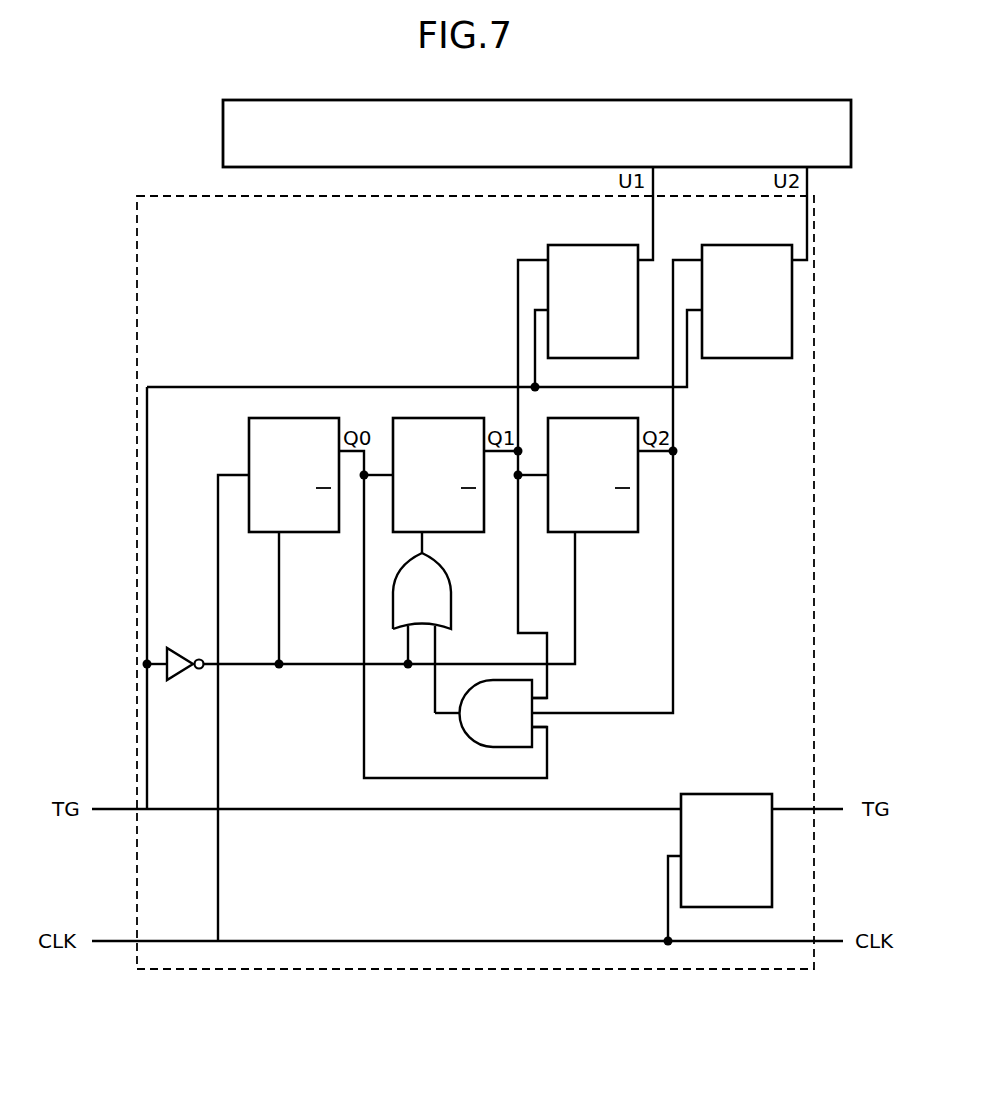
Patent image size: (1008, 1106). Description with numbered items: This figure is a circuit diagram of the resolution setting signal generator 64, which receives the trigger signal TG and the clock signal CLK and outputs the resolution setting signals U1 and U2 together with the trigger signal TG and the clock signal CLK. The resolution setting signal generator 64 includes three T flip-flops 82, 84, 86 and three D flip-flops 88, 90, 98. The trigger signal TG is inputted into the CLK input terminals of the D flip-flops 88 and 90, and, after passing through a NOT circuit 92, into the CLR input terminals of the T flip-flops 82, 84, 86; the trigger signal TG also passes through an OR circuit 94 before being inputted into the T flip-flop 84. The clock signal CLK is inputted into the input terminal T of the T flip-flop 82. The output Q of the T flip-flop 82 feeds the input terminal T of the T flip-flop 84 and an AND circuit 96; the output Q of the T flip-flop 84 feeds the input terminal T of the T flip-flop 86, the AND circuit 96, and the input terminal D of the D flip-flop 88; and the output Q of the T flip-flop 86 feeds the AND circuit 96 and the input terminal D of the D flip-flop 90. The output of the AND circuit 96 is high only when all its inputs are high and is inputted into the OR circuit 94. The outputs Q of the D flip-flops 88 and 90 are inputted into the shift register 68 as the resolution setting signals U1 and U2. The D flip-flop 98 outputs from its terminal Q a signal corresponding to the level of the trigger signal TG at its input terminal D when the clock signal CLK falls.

The resolution setting signal generator 64 is at (137, 305).
The shift register 68 is at (223, 133).
The T flip-flop 82 is at (308, 532).
The T flip-flop 84 is at (456, 532).
The T flip-flop 86 is at (607, 532).
The D flip-flop 88 is at (589, 245).
The D flip-flop 90 is at (742, 245).
The NOT circuit 92 is at (180, 648).
The OR circuit 94 is at (450, 595).
The AND circuit 96 is at (464, 733).
The D flip-flop 98 is at (772, 855).